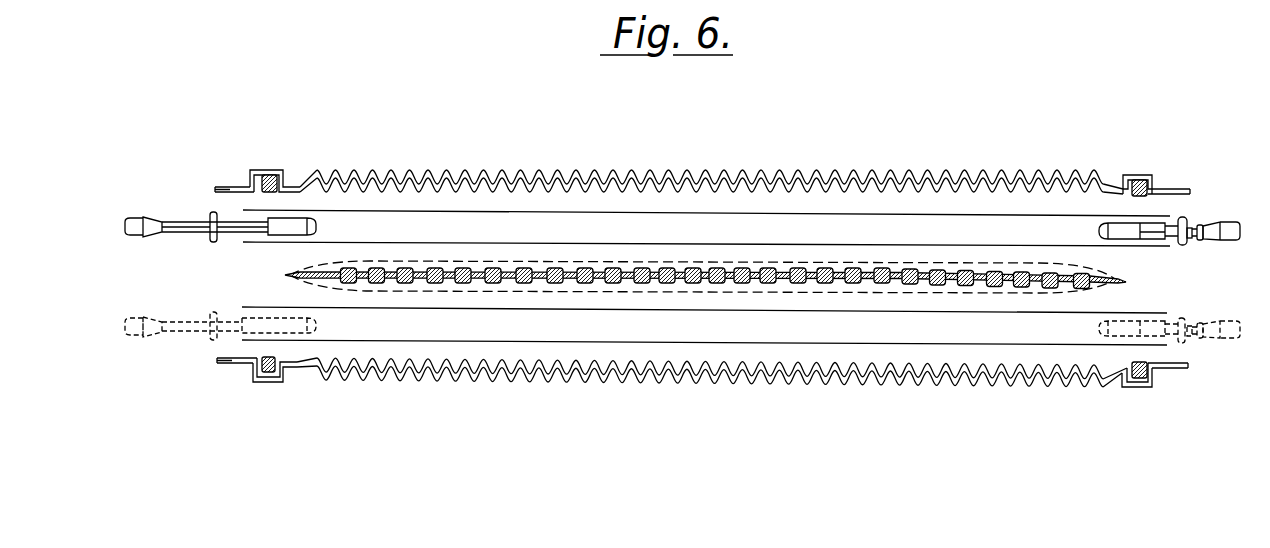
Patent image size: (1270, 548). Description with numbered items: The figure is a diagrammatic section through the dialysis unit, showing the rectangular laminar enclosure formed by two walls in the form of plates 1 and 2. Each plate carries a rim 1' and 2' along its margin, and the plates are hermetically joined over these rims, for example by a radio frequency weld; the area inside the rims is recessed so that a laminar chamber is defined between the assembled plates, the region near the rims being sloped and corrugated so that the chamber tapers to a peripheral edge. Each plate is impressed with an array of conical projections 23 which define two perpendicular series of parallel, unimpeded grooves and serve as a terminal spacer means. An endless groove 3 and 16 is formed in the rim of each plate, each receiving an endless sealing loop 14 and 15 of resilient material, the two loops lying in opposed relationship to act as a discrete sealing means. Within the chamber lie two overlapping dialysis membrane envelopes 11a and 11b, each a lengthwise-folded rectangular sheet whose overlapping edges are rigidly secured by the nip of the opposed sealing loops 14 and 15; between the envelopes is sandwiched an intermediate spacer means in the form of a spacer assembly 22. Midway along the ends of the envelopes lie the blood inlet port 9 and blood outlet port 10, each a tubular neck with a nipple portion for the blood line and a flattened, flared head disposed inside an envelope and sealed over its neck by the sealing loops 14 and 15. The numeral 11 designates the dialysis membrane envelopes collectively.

The plate 1 is at (713, 391).
The rim 1' is at (197, 381).
The plate 2 is at (705, 158).
The rim 2' is at (199, 177).
The endless groove 3 is at (268, 175).
The blood inlet port 9 is at (135, 218).
The blood outlet port 10 is at (1228, 242).
The spacer tube 11 is at (1053, 313).
The dialysis membrane envelope 11a is at (917, 212).
The dialysis membrane envelope 11b is at (912, 313).
The sealing loop 14 is at (280, 175).
The sealing loop 15 is at (263, 373).
The endless groove 16 is at (268, 379).
The spacer assembly 22 is at (285, 275).
The conical projections 23 is at (595, 190).